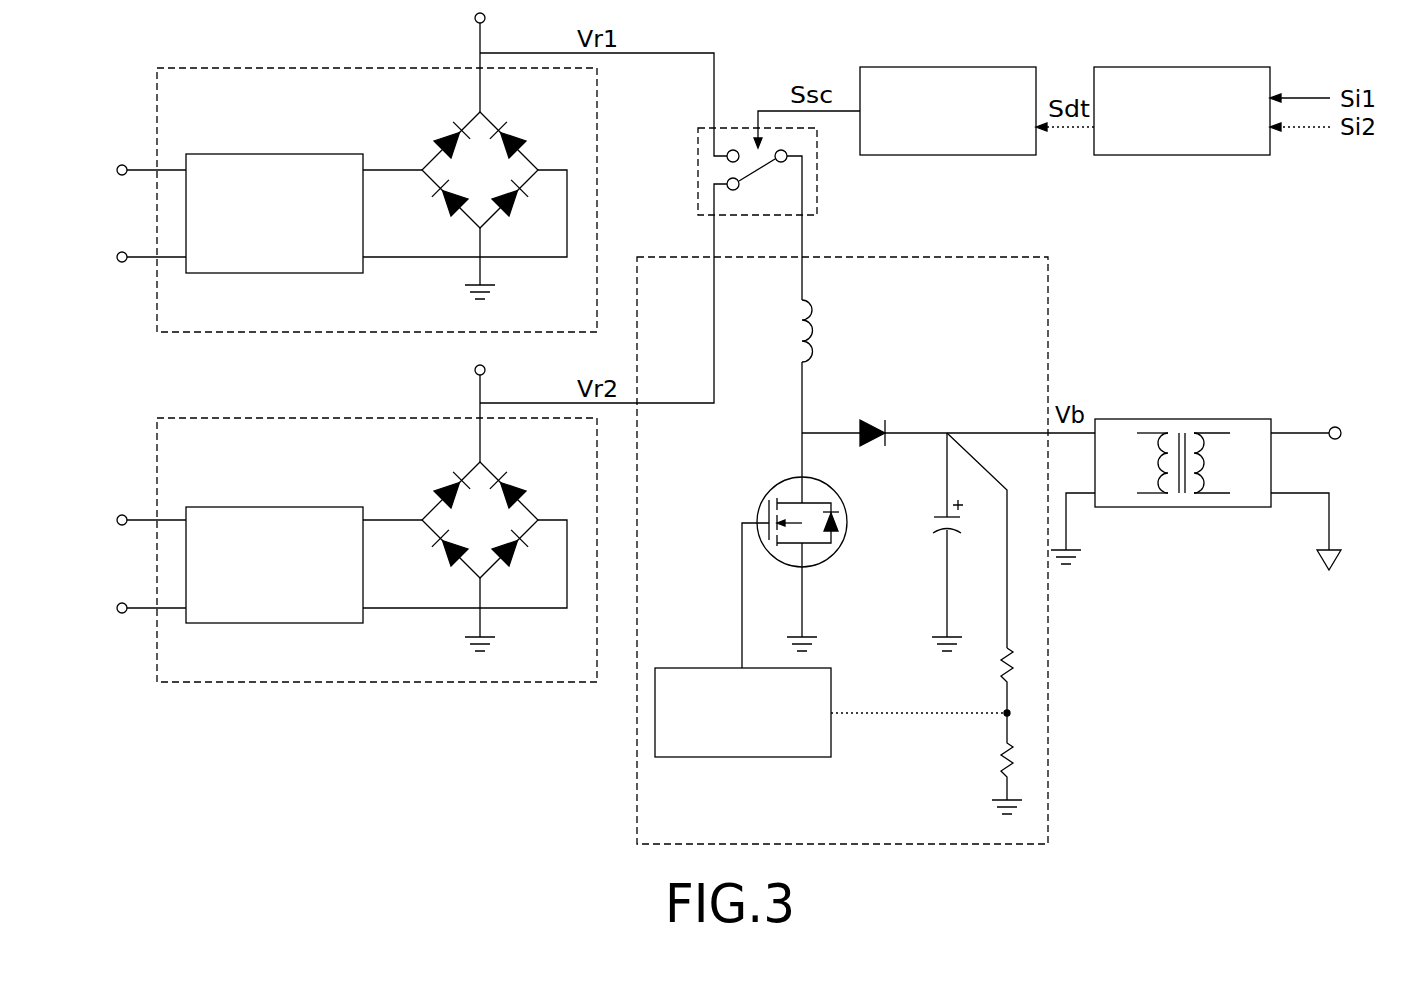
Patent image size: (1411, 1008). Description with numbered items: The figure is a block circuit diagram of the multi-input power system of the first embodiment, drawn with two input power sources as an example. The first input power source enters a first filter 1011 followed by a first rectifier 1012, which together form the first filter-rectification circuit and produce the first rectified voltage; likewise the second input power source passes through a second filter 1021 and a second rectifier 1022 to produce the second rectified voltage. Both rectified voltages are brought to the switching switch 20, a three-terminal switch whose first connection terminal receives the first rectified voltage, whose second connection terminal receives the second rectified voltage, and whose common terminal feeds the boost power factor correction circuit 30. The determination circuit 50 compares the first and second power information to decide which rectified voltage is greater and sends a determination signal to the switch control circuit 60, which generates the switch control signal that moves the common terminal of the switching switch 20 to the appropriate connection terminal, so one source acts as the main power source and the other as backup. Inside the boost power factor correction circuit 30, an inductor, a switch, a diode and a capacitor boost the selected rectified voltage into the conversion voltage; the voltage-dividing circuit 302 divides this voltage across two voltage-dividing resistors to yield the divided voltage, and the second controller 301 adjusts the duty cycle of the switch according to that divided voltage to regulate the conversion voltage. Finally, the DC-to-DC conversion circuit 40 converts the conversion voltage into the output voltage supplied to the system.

The first filter 1011 is at (273, 163).
The first rectifier 1012 is at (472, 116).
The second filter 1021 is at (273, 514).
The second rectifier 1022 is at (472, 466).
The switching switch 20 is at (817, 170).
The boost power factor correction circuit 30 is at (903, 262).
The DC-to-DC conversion circuit 40 is at (1185, 421).
The determination circuit 50 is at (1183, 72).
The switch control circuit 60 is at (950, 69).
The second controller 301 is at (741, 758).
The voltage-dividing circuit 302 is at (972, 728).